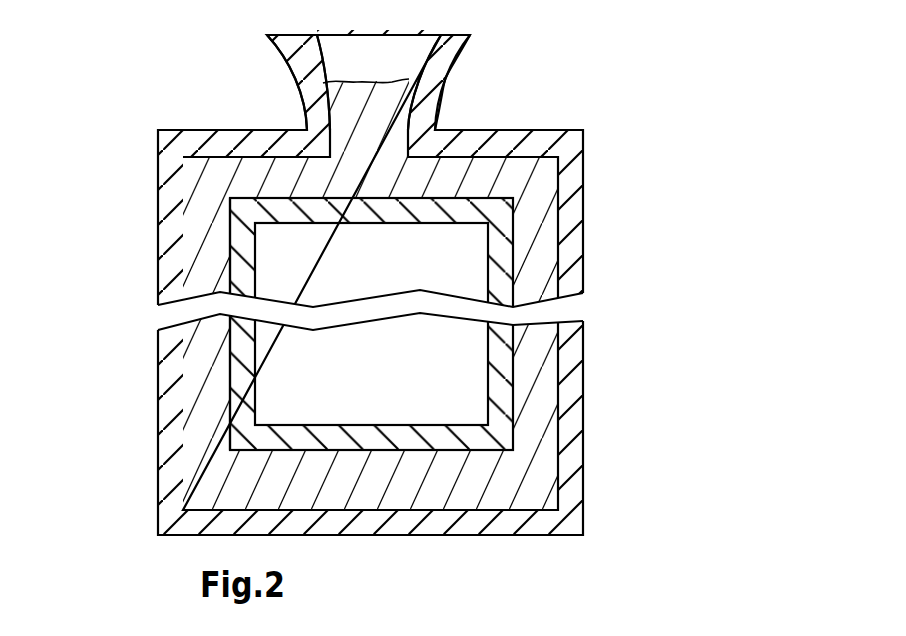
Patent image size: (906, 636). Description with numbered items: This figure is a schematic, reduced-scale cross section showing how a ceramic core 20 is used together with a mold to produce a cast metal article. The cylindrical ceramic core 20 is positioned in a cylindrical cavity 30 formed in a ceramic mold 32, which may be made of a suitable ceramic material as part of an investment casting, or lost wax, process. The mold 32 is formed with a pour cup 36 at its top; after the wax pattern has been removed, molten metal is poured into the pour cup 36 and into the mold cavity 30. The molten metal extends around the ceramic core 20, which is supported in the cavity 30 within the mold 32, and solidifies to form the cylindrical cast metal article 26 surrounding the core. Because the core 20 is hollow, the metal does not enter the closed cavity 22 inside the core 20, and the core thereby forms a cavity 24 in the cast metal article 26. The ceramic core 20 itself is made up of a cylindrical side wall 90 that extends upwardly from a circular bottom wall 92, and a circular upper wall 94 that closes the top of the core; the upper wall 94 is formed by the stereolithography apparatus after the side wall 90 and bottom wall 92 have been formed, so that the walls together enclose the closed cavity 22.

The ceramic core 20 is at (528, 272).
The closed cavity 22 is at (495, 378).
The cavity 24 is at (450, 448).
The cast metal article 26 is at (565, 213).
The cavity 30 is at (560, 452).
The ceramic mold 32 is at (592, 130).
The pour cup 36 is at (444, 72).
The side wall 90 is at (243, 265).
The bottom wall 92 is at (367, 433).
The upper wall 94 is at (273, 198).